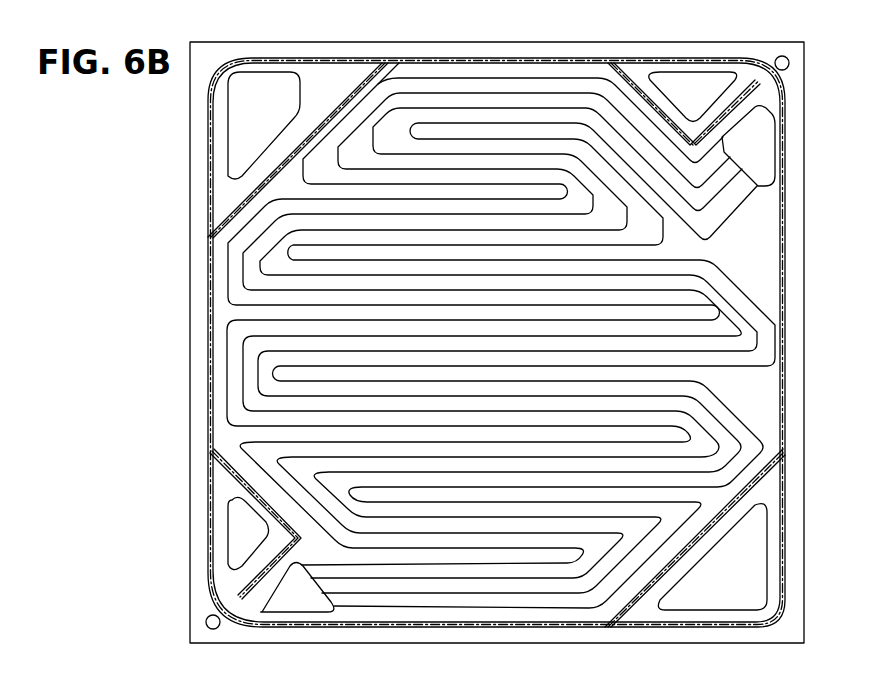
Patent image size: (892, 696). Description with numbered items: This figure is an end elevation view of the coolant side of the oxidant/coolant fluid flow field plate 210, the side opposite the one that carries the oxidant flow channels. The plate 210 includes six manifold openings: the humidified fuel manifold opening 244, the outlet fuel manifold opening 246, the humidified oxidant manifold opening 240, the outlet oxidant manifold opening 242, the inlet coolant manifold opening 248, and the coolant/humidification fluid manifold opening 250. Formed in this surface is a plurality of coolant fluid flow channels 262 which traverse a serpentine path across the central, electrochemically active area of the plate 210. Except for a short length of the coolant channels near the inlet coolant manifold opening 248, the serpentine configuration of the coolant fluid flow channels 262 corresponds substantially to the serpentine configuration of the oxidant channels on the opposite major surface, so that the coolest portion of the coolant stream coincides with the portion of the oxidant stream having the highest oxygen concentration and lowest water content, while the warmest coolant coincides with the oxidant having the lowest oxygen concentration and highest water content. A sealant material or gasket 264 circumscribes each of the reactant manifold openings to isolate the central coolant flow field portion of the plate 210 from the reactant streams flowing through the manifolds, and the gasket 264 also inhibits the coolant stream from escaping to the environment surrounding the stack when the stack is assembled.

The oxidant/coolant fluid flow field plate 210 is at (742, 48).
The humidified oxidant manifold opening 240 is at (705, 600).
The outlet oxidant manifold opening 242 is at (250, 123).
The humidified fuel manifold opening 244 is at (235, 527).
The outlet fuel manifold opening 246 is at (680, 85).
The inlet coolant manifold opening 248 is at (758, 127).
The coolant/humidification fluid manifold opening 250 is at (265, 603).
The coolant fluid flow channels 262 is at (499, 120).
The sealant material or gasket 264 is at (330, 60).